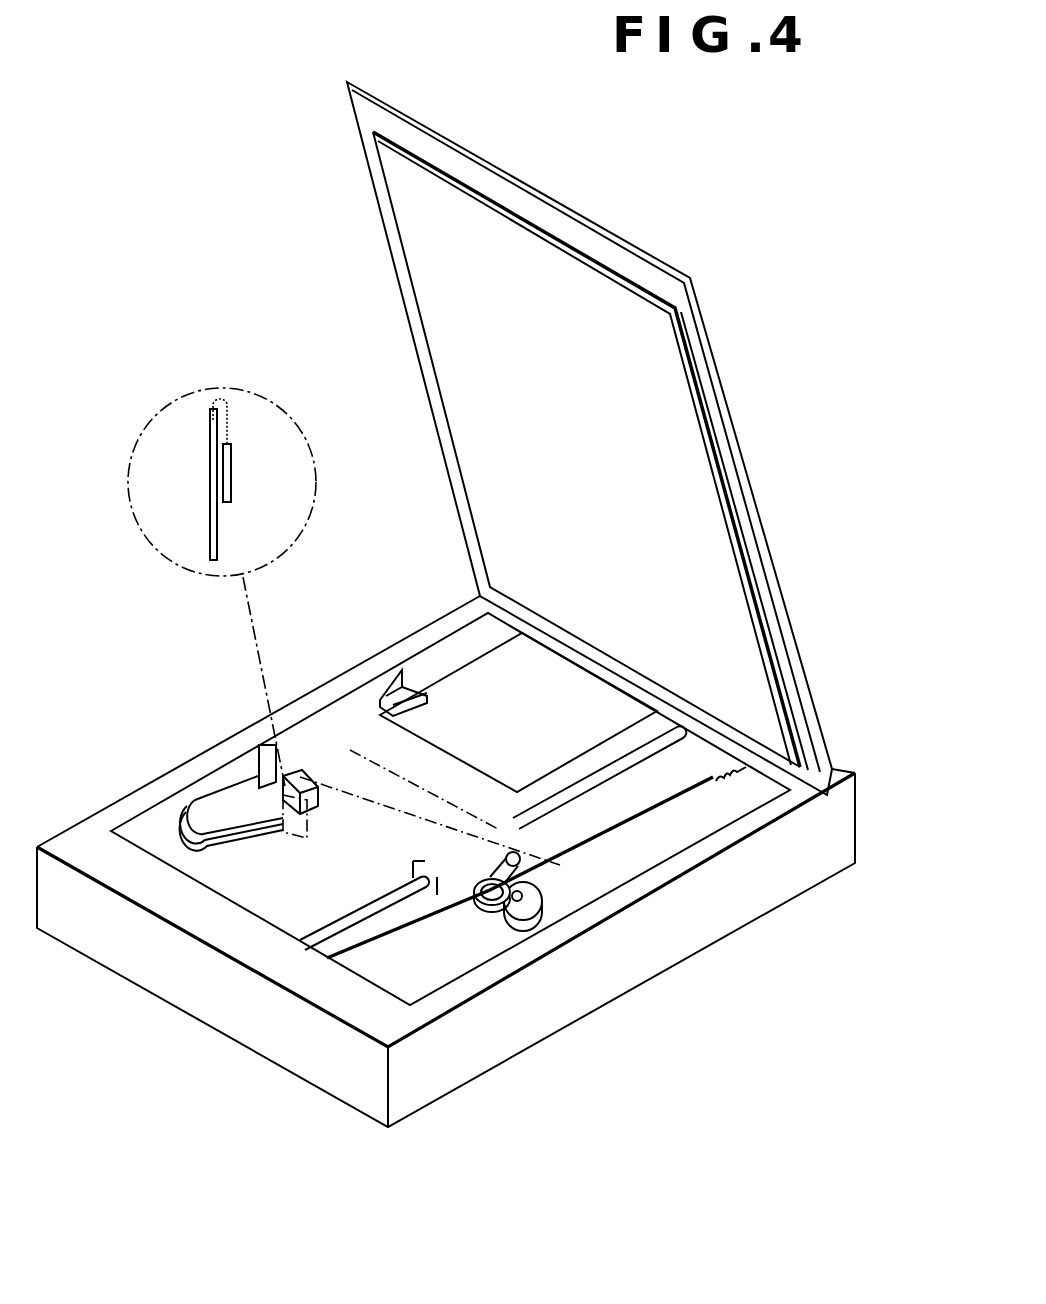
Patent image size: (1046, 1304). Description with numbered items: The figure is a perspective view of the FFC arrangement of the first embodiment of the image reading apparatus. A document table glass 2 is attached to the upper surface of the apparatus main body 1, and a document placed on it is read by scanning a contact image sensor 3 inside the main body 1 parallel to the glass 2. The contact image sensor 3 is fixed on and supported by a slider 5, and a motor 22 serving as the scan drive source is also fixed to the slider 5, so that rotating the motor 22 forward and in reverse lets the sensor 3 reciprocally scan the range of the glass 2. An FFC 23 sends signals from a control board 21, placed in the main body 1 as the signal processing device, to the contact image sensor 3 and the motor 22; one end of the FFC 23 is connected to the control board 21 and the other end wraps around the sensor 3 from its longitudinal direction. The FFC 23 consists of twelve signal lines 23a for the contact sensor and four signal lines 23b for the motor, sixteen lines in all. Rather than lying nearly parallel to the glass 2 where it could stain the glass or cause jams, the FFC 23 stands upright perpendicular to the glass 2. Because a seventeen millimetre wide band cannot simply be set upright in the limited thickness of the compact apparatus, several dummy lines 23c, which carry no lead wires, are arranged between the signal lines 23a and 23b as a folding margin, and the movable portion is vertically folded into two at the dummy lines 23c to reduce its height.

The apparatus main body 1 is at (672, 928).
The document table glass 2 is at (692, 827).
The contact image sensor 3 is at (600, 870).
The slider 5 is at (437, 890).
The control board 21 is at (480, 703).
The motor 22 is at (514, 928).
The FFC 23 is at (208, 786).
The signal lines for the contact sensor 23a is at (298, 780).
The signal lines for the motor 23b is at (378, 820).
The dummy lines 23c is at (226, 392).